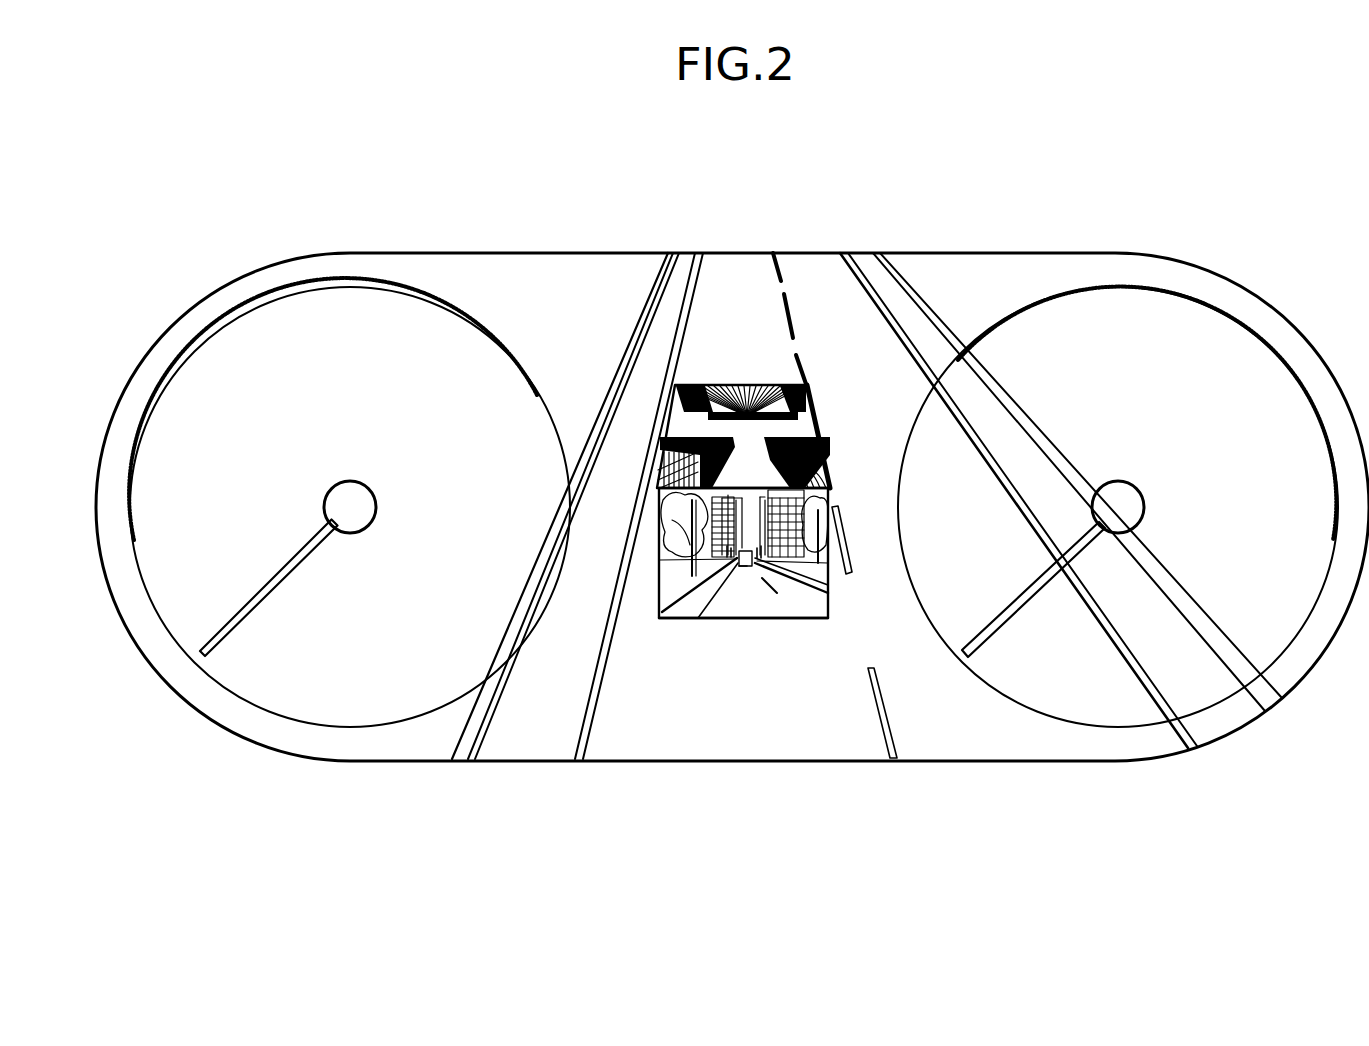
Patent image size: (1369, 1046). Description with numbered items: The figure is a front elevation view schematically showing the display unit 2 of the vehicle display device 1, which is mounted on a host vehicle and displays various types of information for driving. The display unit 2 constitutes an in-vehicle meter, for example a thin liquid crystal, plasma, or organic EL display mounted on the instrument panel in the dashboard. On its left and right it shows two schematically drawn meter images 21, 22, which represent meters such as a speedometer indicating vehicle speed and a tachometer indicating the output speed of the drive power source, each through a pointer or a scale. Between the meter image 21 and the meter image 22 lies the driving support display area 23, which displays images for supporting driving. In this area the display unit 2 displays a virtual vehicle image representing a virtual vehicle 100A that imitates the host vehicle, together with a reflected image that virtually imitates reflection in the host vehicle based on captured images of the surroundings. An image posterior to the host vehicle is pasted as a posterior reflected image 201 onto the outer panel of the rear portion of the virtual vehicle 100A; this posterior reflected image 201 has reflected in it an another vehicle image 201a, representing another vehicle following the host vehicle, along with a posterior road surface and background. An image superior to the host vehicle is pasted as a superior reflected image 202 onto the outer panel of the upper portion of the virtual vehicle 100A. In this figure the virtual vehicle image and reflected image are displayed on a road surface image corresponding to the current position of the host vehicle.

The vehicle display device 1 is at (467, 218).
The display unit 2 is at (627, 792).
The meter image 21 is at (381, 732).
The meter image 22 is at (1122, 732).
The driving support display area 23 is at (694, 728).
The virtual vehicle 100A is at (803, 627).
The posterior reflected image 201 is at (770, 598).
The another vehicle image 201a is at (746, 567).
The superior reflected image 202 is at (750, 438).